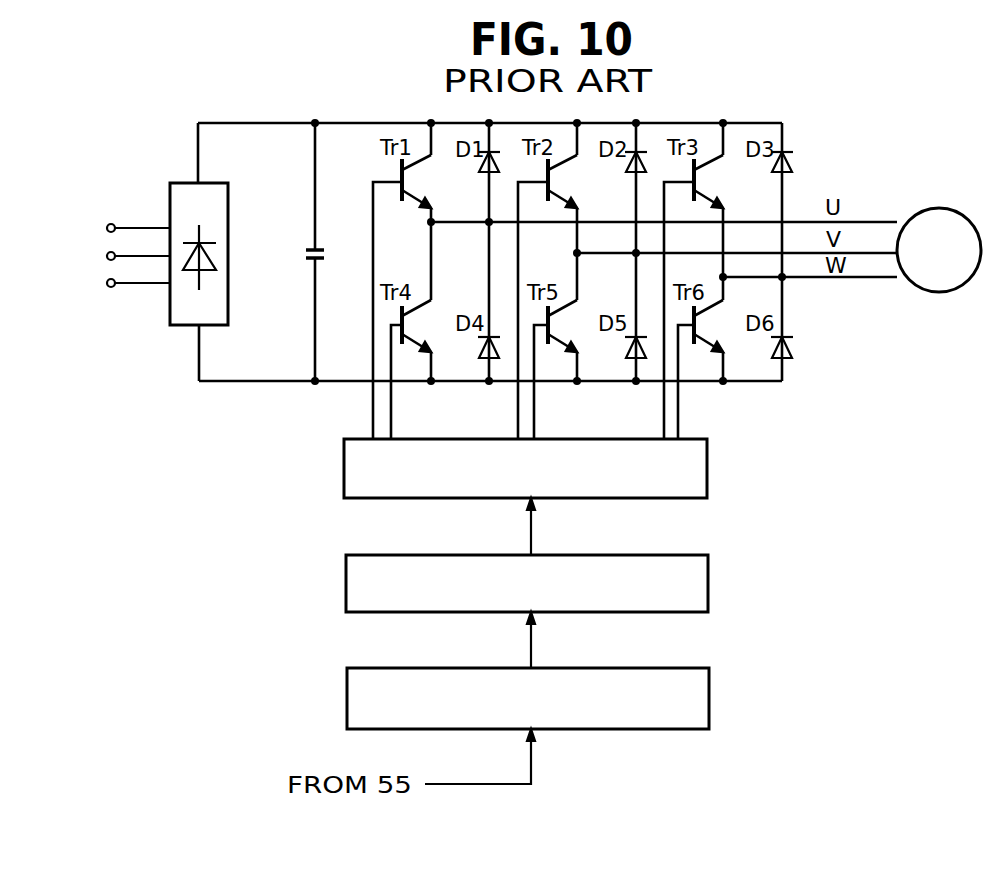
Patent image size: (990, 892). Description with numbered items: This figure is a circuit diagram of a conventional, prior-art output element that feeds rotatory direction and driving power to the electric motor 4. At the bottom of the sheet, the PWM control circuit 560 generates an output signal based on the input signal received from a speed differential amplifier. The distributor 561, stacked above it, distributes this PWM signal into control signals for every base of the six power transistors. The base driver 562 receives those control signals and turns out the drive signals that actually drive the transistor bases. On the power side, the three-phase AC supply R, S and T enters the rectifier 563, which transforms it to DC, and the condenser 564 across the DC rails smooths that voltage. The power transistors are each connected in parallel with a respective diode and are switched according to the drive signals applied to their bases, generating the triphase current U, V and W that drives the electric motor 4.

The rectifier 563 is at (178, 183).
The condenser 564 is at (312, 250).
The base driver 562 is at (344, 467).
The distributor 561 is at (346, 582).
The PWM control circuit 560 is at (347, 698).
The electric motor 4 is at (951, 208).